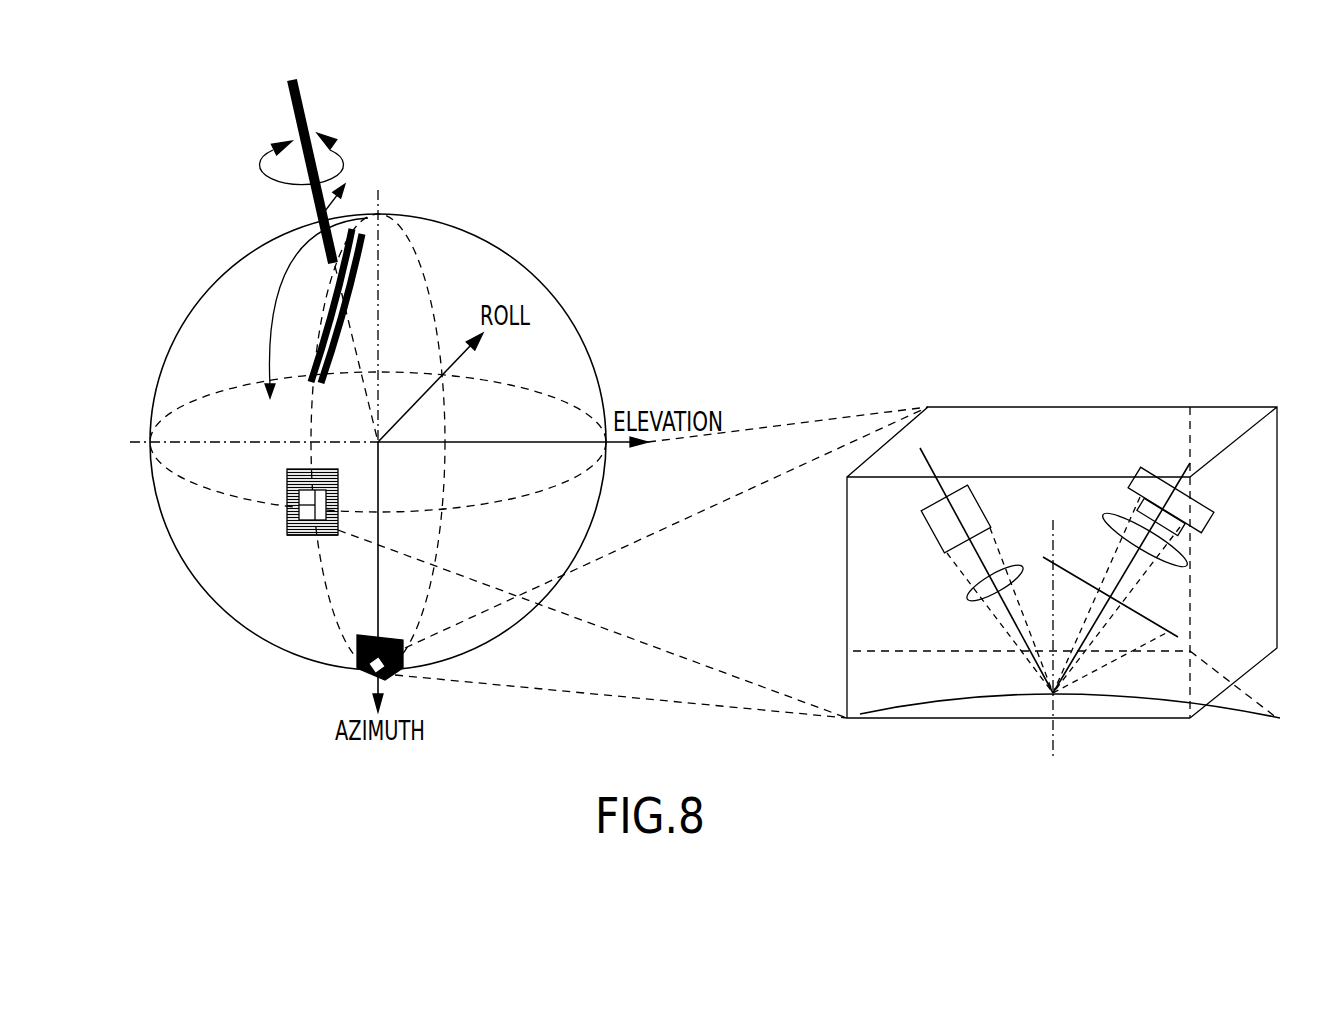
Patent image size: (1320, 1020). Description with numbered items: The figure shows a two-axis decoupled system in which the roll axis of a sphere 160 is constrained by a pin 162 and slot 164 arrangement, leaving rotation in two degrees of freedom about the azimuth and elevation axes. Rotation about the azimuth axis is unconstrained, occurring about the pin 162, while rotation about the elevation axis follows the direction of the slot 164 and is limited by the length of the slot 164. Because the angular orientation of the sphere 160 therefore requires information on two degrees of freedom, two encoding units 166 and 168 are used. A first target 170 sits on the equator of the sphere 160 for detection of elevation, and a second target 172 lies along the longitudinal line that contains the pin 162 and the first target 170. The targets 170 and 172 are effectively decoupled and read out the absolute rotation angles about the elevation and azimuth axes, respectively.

The sphere 160 is at (600, 338).
The pin 162 is at (280, 93).
The slot 164 is at (306, 292).
The encoding unit 166 is at (272, 508).
The target 170 is at (300, 543).
The encoding unit 168 is at (341, 665).
The target 172 is at (413, 663).